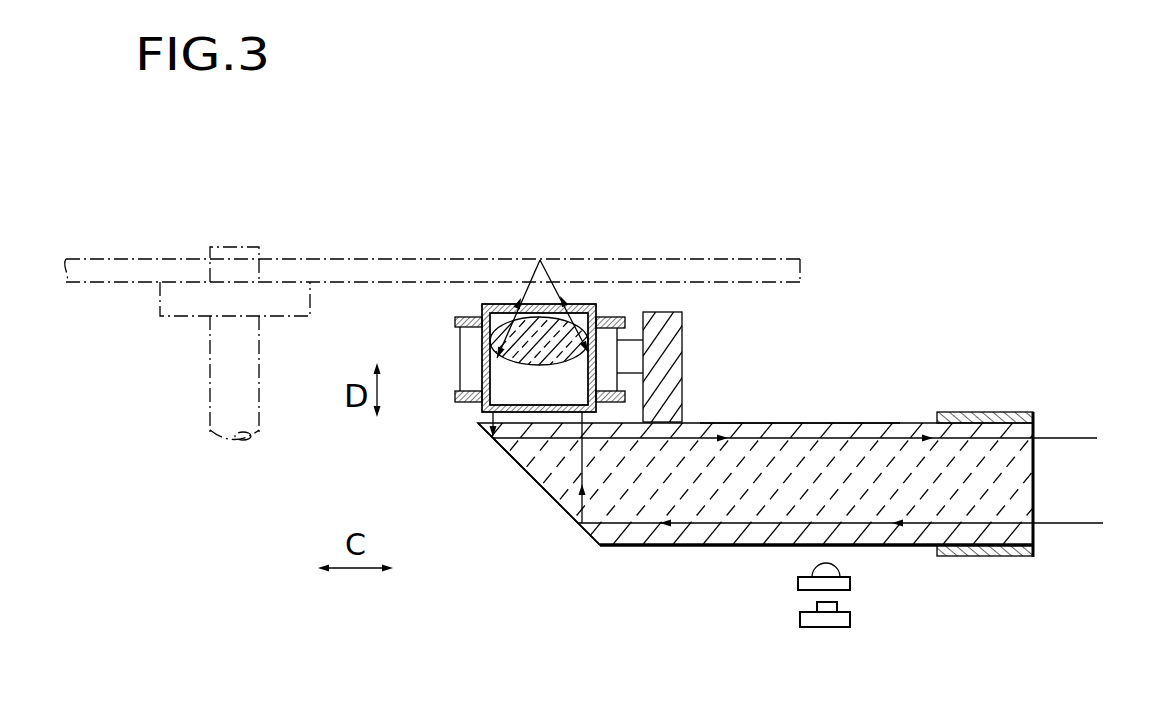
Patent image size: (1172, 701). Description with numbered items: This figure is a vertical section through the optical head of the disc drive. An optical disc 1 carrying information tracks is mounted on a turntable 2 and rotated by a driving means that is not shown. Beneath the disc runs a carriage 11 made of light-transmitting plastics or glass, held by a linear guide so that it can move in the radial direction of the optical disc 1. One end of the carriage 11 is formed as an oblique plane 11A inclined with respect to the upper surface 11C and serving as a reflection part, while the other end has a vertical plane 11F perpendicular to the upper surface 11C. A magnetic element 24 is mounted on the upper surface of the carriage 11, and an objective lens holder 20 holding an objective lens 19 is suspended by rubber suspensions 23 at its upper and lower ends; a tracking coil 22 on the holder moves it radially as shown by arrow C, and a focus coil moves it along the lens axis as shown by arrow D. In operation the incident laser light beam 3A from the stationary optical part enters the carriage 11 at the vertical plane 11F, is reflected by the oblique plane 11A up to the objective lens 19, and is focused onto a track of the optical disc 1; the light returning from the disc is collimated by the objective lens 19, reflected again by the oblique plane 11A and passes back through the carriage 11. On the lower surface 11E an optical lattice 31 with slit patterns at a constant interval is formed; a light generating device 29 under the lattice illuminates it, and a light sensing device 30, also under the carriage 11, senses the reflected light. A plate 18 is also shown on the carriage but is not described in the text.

The optical disc 1 is at (732, 263).
The turntable 2 is at (249, 247).
The incident laser light beam 3A is at (1050, 439).
The carriage 11 is at (882, 450).
The oblique plane 11A is at (592, 547).
The upper surface 11C is at (777, 423).
The lower surface 11E is at (662, 547).
The vertical plane 11F is at (1038, 428).
The mounting plate 18 is at (975, 417).
The objective lens 19 is at (532, 366).
The objective lens holder 20 is at (457, 328).
The tracking coil 22 is at (610, 315).
The rubber suspension 23 is at (508, 318).
The magnetic element 24 is at (658, 298).
The light generating device 29 is at (835, 628).
The light sensing device 30 is at (850, 583).
The optical lattice 31 is at (760, 548).